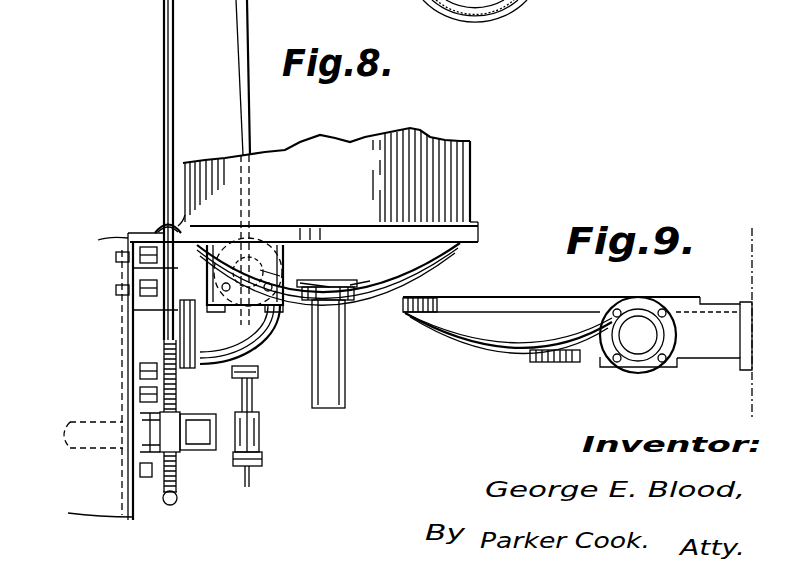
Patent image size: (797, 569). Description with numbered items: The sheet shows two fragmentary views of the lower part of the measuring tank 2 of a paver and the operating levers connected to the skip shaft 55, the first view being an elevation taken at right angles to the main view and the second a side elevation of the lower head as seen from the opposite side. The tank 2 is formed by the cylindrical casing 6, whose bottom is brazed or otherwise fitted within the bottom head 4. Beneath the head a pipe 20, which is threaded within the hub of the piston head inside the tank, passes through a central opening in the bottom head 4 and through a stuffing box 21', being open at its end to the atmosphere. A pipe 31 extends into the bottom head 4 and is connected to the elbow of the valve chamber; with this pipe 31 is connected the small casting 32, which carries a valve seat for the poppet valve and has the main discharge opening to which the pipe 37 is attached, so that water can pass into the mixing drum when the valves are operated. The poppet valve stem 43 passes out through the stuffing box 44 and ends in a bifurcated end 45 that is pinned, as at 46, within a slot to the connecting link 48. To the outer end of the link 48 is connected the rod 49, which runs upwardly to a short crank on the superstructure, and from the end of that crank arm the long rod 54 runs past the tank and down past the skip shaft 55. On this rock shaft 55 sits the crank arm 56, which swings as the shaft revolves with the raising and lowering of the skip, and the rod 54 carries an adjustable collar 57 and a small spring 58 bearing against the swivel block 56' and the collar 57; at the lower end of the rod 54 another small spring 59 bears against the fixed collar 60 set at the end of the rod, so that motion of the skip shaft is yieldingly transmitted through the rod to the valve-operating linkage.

In FIG. 8, the measuring tank 2 is at (423, 136).
In FIG. 8, the bottom head 4 is at (405, 248).
In FIG. 9, the bottom head 4 is at (510, 327).
In FIG. 8, the cylindrical casing 6 is at (567, 0).
In FIG. 8, the pipe 20 is at (330, 365).
In FIG. 8, the stuffing box 21' is at (345, 309).
In FIG. 8, the pipe 31 is at (255, 316).
In FIG. 9, the pipe 31 is at (637, 352).
In FIG. 8, the small casting 32 is at (253, 327).
In FIG. 8, the pipe 37 is at (148, 338).
In FIG. 8, the valve stem 43 is at (252, 394).
In FIG. 8, the stuffing box 44 is at (258, 377).
In FIG. 8, the bifurcated end 45 is at (259, 428).
In FIG. 8, the pin 46 is at (262, 460).
In FIG. 8, the connecting link 48 is at (259, 489).
In FIG. 8, the rod 49 is at (235, 22).
In FIG. 8, the long rod 54 is at (166, 81).
In FIG. 8, the skip shaft 55 is at (108, 413).
In FIG. 8, the crank arm 56 is at (185, 450).
In FIG. 8, the swivel block 56' is at (121, 453).
In FIG. 8, the adjustable collar 57 is at (162, 224).
In FIG. 8, the small spring 58 is at (176, 378).
In FIG. 8, the small spring 59 is at (178, 478).
In FIG. 8, the fixed collar 60 is at (175, 502).